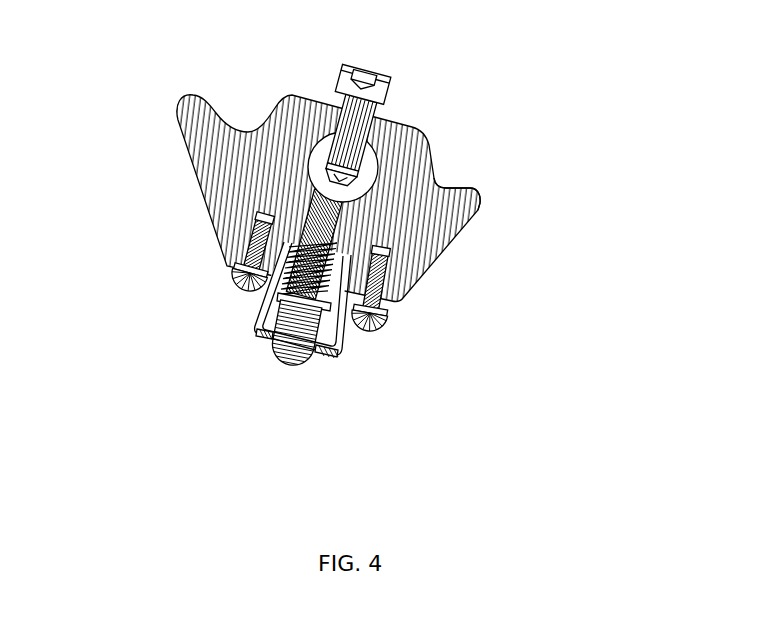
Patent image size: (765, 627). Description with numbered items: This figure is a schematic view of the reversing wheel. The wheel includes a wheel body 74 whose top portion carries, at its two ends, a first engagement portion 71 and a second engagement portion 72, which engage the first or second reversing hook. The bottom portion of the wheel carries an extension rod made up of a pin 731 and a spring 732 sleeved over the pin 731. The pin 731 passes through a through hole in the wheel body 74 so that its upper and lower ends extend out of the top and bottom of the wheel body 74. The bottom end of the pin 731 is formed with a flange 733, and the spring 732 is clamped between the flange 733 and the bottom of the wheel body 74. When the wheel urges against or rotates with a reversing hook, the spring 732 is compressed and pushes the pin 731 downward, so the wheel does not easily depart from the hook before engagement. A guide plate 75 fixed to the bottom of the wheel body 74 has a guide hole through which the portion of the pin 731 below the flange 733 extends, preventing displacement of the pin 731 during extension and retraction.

The first engagement portion 71 is at (198, 123).
The second engagement portion 72 is at (474, 187).
The wheel body 74 is at (397, 172).
The pin 731 is at (305, 323).
The spring 732 is at (293, 268).
The flange 733 is at (333, 312).
The guide plate 75 is at (258, 335).